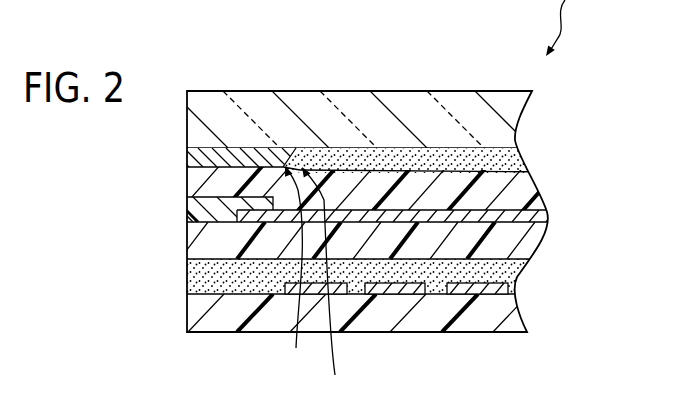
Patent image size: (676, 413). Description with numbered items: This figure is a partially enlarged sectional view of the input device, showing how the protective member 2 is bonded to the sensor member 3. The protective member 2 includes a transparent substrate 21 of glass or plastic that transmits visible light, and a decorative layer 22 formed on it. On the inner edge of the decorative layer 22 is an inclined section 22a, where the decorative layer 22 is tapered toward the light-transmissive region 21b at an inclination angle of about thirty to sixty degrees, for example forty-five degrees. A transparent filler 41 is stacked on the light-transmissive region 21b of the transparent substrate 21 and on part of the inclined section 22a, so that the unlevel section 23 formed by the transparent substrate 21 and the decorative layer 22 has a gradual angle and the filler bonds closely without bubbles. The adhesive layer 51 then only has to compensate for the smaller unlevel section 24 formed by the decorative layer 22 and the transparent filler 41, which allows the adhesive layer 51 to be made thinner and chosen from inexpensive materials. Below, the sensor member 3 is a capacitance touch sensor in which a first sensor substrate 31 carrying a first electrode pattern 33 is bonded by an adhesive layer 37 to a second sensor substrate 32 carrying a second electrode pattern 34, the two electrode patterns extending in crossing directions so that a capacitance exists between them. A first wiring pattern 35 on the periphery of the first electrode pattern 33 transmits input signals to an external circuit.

The protective member 2 is at (293, 37).
The transparent substrate 21 is at (203, 100).
The light-transmissive region 21b is at (533, 71).
The decorative layer 22 is at (251, 152).
The inclined section 22a is at (301, 149).
The transparent filler 41 is at (533, 153).
The adhesive layer 51 is at (533, 185).
The first wiring pattern 35 is at (188, 202).
The sensor member 3 is at (552, 333).
The first electrode pattern 33 is at (428, 215).
The first sensor substrate 31 is at (252, 247).
The second sensor substrate 32 is at (353, 326).
The adhesive layer 37 is at (212, 297).
The second electrode pattern 34 is at (483, 296).
The unlevel section 24 is at (297, 269).
The unlevel section 23 is at (325, 285).